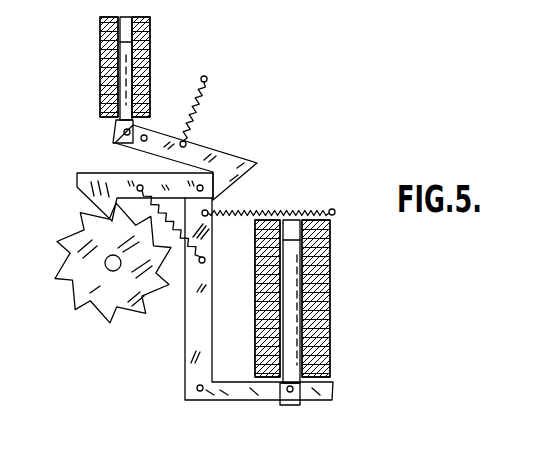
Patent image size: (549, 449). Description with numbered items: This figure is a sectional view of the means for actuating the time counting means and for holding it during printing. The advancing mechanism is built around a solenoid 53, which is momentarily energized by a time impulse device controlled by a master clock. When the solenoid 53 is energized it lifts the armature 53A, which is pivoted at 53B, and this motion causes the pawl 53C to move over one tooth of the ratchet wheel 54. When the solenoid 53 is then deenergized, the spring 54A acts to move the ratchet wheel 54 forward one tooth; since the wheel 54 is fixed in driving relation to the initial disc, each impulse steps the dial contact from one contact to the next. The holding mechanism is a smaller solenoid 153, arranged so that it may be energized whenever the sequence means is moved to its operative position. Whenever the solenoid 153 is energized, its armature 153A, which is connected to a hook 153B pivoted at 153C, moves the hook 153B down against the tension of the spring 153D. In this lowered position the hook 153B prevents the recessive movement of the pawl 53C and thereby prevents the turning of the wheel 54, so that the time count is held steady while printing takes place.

The solenoid 153 is at (97, 80).
The armature 153A is at (115, 116).
The hook 153B is at (203, 147).
The pivot 153C is at (141, 140).
The spring 153D is at (203, 97).
The pawl 53C is at (77, 181).
The pivot 53B is at (200, 392).
The armature 53A is at (260, 402).
The solenoid 53 is at (328, 318).
The spring 54A is at (287, 213).
The ratchet wheel 54 is at (113, 263).